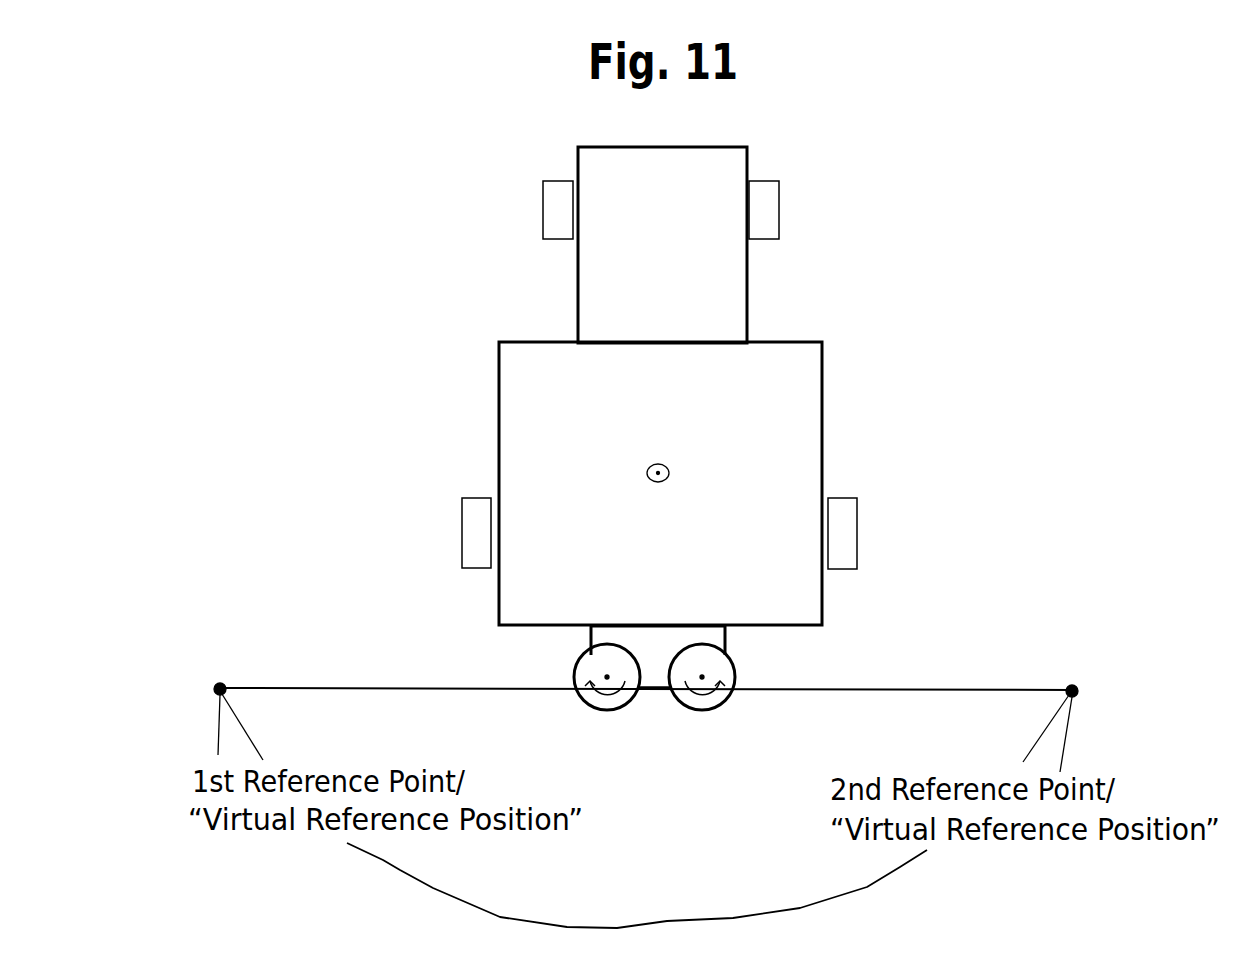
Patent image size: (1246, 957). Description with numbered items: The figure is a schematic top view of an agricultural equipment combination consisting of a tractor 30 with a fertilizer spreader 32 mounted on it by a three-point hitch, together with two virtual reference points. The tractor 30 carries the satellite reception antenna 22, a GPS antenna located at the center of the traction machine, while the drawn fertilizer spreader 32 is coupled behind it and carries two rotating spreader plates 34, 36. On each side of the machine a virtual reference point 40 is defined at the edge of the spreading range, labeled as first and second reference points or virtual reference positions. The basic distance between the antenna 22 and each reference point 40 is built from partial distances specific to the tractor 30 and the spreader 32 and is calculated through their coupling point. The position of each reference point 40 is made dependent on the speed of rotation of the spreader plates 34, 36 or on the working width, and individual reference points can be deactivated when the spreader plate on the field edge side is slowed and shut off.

The satellite reception antenna 22 is at (660, 472).
The tractor 30 is at (747, 147).
The fertilizer spreader 32 is at (822, 340).
The spreader plate 34 is at (735, 672).
The spreader plate 36 is at (577, 672).
The virtual reference point 40 is at (226, 686).